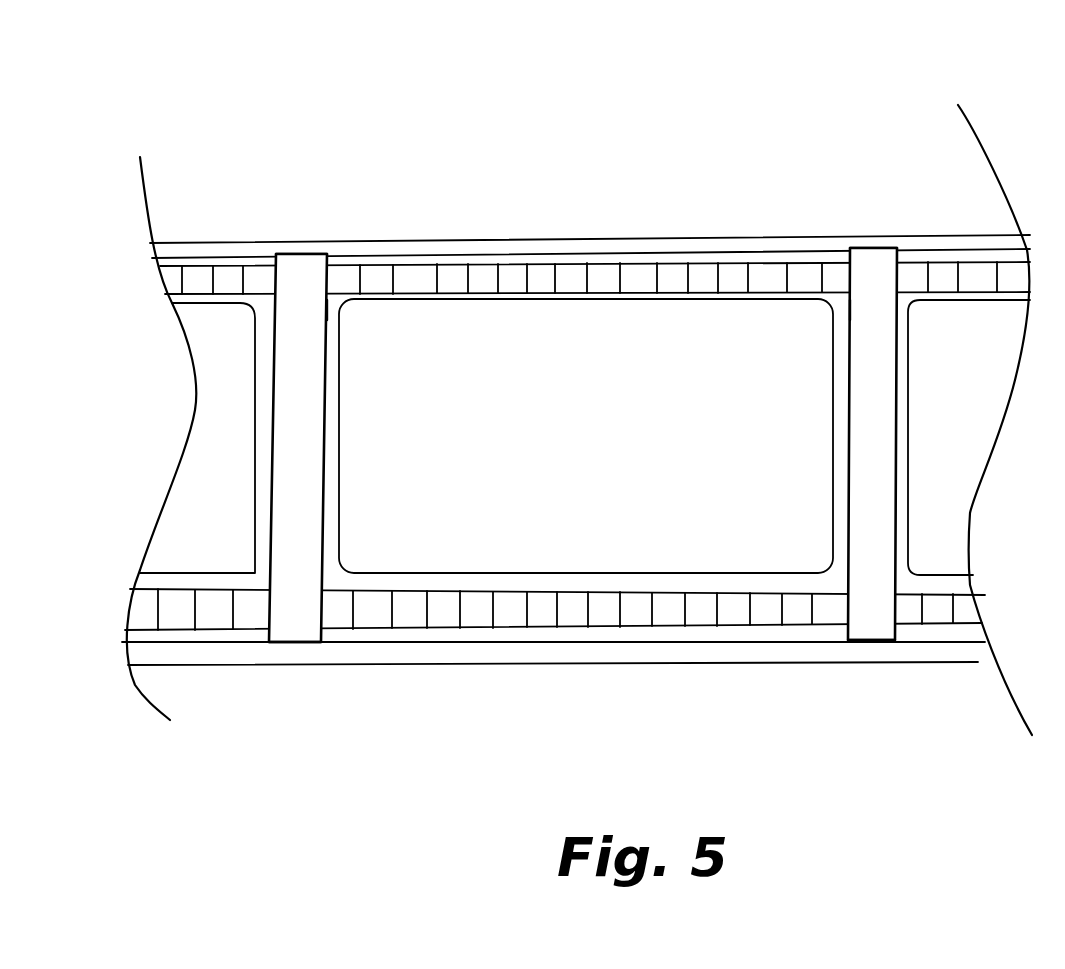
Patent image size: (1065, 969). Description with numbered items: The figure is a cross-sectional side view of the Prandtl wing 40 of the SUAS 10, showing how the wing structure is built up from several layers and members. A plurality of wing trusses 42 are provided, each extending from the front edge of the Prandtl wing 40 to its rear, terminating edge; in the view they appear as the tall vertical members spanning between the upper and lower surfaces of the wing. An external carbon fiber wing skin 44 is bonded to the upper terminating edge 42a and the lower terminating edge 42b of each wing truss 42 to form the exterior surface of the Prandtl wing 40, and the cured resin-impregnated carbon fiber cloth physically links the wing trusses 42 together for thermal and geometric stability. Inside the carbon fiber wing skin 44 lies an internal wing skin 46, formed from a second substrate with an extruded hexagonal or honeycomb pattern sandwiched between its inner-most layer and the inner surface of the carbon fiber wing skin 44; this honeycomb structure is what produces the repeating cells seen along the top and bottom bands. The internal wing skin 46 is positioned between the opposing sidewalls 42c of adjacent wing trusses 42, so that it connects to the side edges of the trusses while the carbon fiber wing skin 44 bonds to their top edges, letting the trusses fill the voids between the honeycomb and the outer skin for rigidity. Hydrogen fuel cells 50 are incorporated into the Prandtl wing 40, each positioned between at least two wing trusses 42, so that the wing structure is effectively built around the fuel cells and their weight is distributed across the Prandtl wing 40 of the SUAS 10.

The SUAS 10 is at (896, 100).
The Prandtl wing 40 is at (576, 441).
The wing truss 42 is at (577, 464).
The upper terminating edge 42a is at (310, 253).
The lower terminating edge 42b is at (303, 643).
The sidewall 42c is at (327, 313).
The carbon fiber wing skin 44 is at (563, 247).
The internal wing skin 46 is at (453, 277).
The hydrogen fuel cell 50 is at (238, 449).